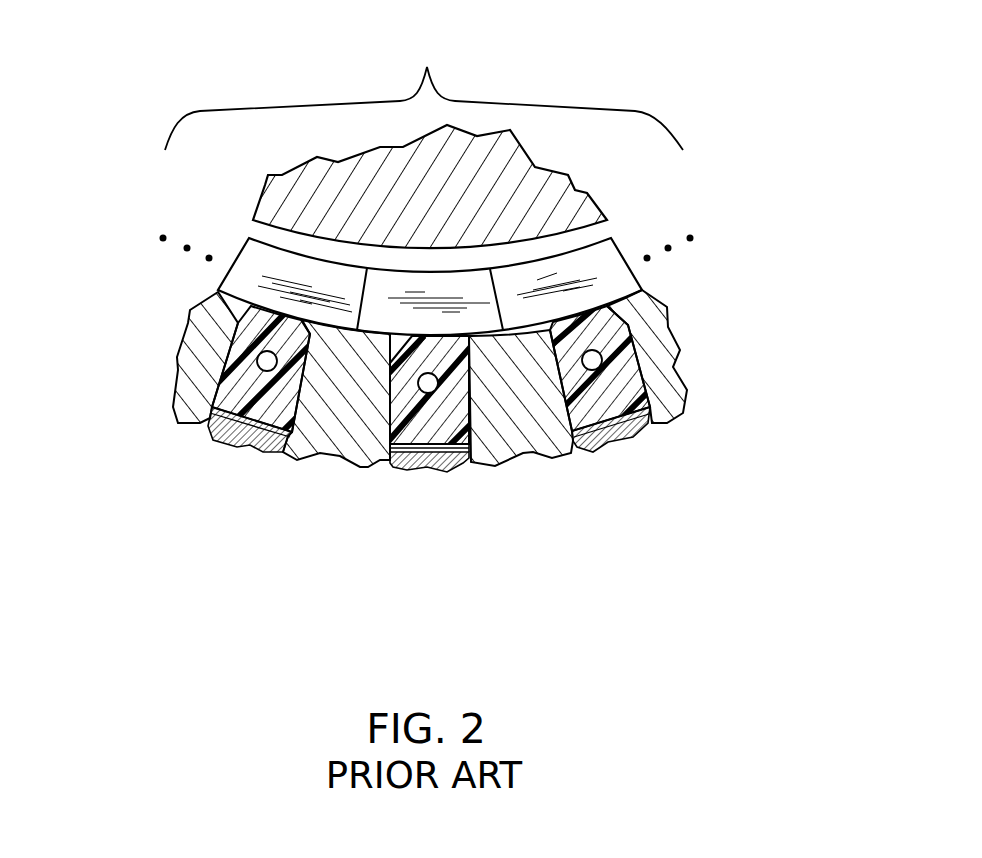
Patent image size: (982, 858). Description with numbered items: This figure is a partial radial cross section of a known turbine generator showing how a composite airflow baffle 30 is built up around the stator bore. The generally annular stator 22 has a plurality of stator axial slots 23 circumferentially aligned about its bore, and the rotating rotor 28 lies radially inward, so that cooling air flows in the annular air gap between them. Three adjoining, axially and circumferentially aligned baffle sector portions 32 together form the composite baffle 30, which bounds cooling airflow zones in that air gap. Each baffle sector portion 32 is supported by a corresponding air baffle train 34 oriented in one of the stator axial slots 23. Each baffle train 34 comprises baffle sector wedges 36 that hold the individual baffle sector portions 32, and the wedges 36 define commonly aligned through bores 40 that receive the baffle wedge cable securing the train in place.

The composite airflow baffle 30 is at (424, 94).
The rotor 28 is at (533, 188).
The baffle sector portion 32 is at (230, 262).
The stator 22 is at (318, 433).
The stator axial slot 23 is at (237, 355).
The through bore 40 is at (259, 356).
The baffle sector wedge 36 is at (253, 450).
The air baffle train 34 is at (208, 454).